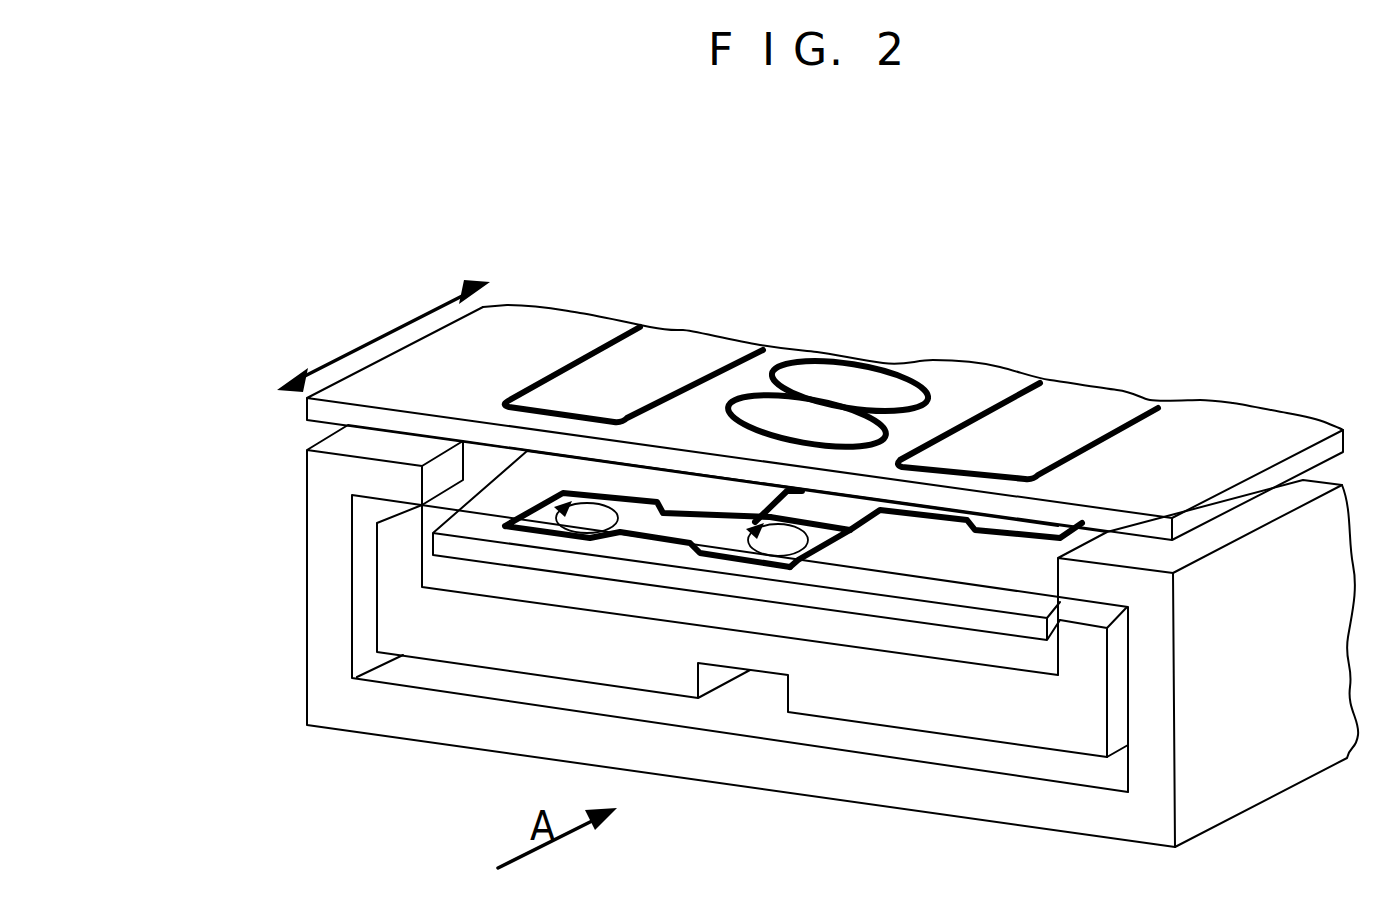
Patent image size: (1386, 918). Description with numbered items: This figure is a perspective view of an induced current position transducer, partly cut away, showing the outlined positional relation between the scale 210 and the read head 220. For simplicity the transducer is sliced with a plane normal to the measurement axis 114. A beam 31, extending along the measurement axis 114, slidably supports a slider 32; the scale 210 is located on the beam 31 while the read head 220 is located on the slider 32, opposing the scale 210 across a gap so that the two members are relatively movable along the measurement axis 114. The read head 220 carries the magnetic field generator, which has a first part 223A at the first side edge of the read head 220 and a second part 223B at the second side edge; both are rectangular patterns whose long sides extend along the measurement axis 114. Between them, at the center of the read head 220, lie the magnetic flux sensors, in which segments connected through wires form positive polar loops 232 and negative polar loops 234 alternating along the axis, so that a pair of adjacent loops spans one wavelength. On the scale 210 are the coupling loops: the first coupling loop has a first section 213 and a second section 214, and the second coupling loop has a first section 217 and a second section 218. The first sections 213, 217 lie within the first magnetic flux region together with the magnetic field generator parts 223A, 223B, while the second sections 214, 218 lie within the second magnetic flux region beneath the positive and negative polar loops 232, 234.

The measurement axis 114 is at (367, 343).
The slider 32 is at (330, 528).
The beam 31 is at (417, 615).
The read head 220 is at (497, 373).
The first part of the magnetic field generator 223A is at (600, 335).
The positive polar loop 232 is at (777, 363).
The negative polar loop 234 is at (806, 420).
The second section of the second coupling loop 218 is at (843, 507).
The second part of the magnetic field generator 223B is at (1060, 400).
The first section of the second coupling loop 217 is at (1075, 533).
The first section of the first coupling loop 213 is at (555, 497).
The second section of the first coupling loop 214 is at (817, 557).
The scale 210 is at (1023, 630).